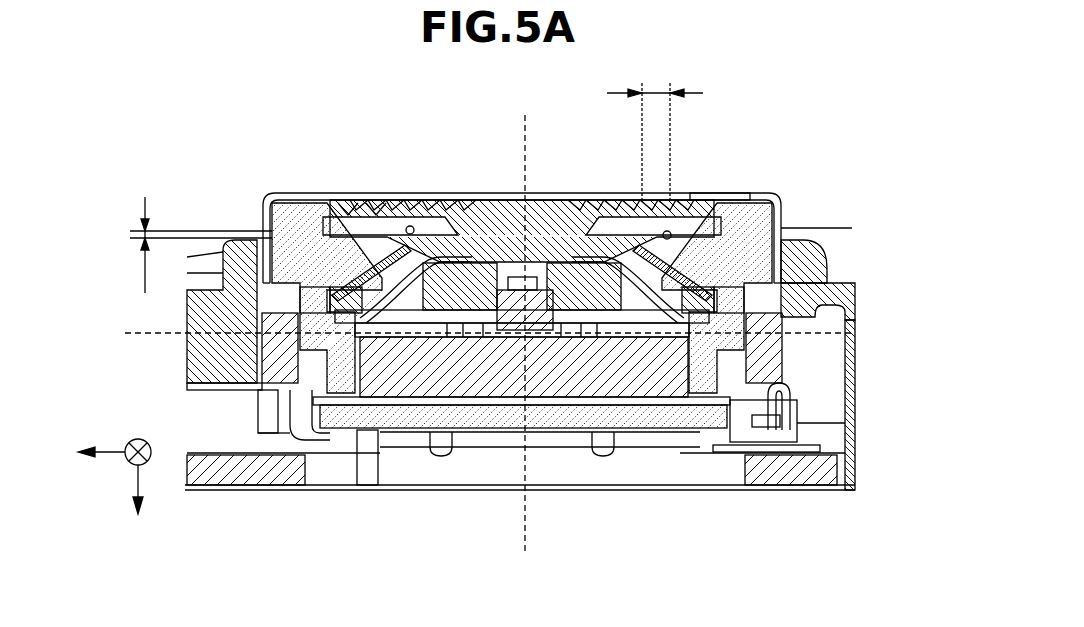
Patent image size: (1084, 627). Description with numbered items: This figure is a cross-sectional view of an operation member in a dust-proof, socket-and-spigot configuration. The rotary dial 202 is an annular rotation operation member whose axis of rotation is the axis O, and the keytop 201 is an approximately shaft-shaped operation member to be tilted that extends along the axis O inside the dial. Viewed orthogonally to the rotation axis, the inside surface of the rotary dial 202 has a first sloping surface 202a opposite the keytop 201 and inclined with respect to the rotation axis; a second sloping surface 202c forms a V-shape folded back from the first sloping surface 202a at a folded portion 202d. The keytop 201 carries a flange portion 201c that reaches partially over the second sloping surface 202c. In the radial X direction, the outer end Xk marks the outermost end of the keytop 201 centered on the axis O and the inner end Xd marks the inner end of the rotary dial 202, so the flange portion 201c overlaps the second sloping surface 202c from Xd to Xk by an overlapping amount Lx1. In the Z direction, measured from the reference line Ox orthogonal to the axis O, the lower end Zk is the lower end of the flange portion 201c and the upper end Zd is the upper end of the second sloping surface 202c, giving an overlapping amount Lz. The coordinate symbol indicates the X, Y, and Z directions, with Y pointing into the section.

The keytop 201 is at (475, 197).
The flange portion 201c is at (405, 197).
The rotary dial 202 is at (777, 195).
The first sloping surface 202a is at (723, 193).
The second sloping surface 202c is at (815, 262).
The folded portion 202d is at (800, 298).
The lower end Zk is at (343, 208).
The upper end Zd is at (372, 203).
The outer end Xk is at (660, 230).
The inner end Xd is at (617, 212).
The overlapping amount Lz is at (184, 245).
The overlapping amount Lx1 is at (655, 130).
The axis O is at (524, 324).
The reference line Ox is at (467, 335).
The X direction X is at (90, 455).
The Y direction Y is at (140, 440).
The Z direction Z is at (138, 504).